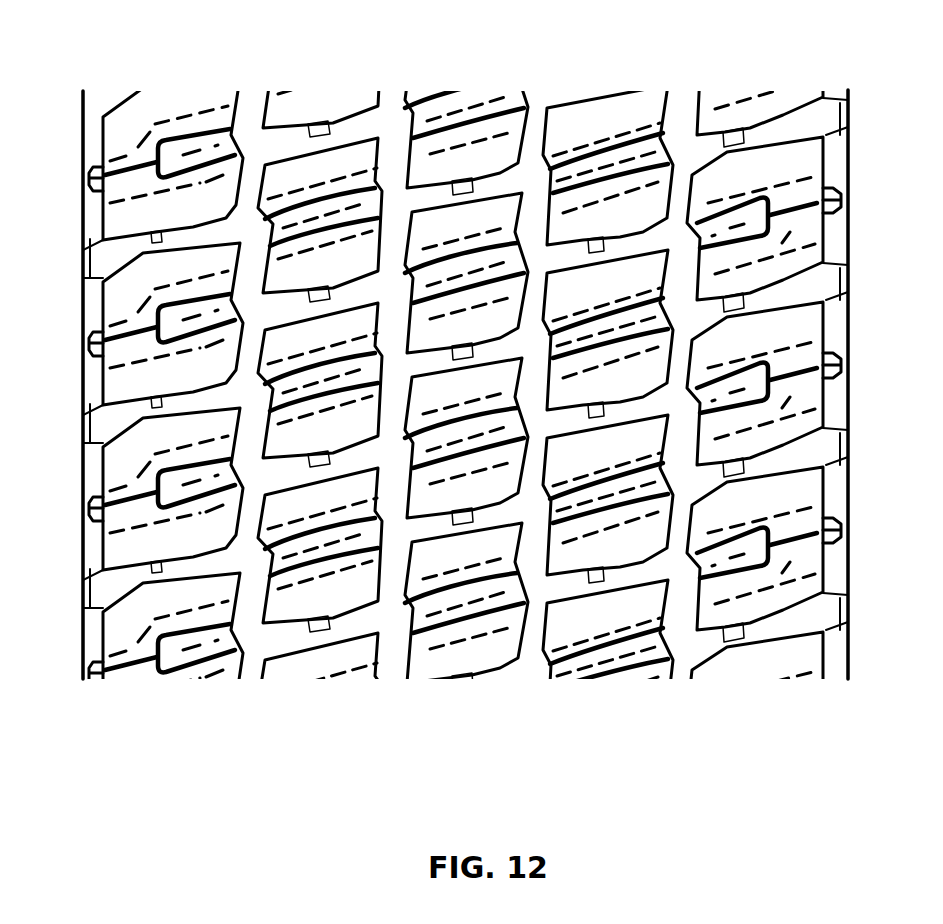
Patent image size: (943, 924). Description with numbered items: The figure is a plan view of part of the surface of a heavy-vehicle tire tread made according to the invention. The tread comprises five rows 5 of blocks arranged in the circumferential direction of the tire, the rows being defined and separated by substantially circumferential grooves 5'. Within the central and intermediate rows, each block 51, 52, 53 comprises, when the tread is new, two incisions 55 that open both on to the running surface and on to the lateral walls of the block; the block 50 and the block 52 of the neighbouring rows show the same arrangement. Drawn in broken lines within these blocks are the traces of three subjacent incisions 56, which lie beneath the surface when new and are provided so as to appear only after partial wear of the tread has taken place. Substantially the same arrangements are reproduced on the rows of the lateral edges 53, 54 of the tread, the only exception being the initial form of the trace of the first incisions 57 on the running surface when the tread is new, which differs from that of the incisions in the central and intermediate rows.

The rows of blocks 5 is at (465, 403).
The circumferential grooves 5' is at (472, 700).
The second rib 50 is at (328, 660).
The block of central and intermediate rows 51 is at (500, 648).
The block of central and intermediate rows 52 is at (598, 620).
The block of lateral edge row 53 is at (165, 607).
The row of lateral edge 54 is at (735, 663).
The incisions 55 is at (488, 598).
The subjacent incisions 56 is at (480, 273).
The first incisions 57 is at (757, 183).